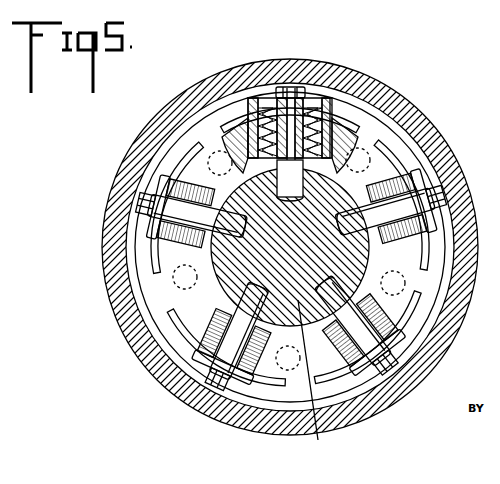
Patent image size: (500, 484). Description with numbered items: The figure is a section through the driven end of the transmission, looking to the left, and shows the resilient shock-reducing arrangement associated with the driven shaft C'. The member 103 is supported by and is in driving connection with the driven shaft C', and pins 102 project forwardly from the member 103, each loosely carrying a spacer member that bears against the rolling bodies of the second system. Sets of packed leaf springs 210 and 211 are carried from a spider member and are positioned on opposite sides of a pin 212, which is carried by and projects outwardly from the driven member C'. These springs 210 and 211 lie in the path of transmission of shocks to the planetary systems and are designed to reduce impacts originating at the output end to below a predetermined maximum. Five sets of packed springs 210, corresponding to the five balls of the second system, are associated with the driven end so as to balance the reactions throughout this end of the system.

The pin 102 is at (208, 152).
The member 103 is at (207, 286).
The packed leaf springs 210 is at (248, 112).
The packed leaf springs 211 is at (330, 112).
The pin 212 is at (420, 193).
The driven shaft C' is at (314, 380).